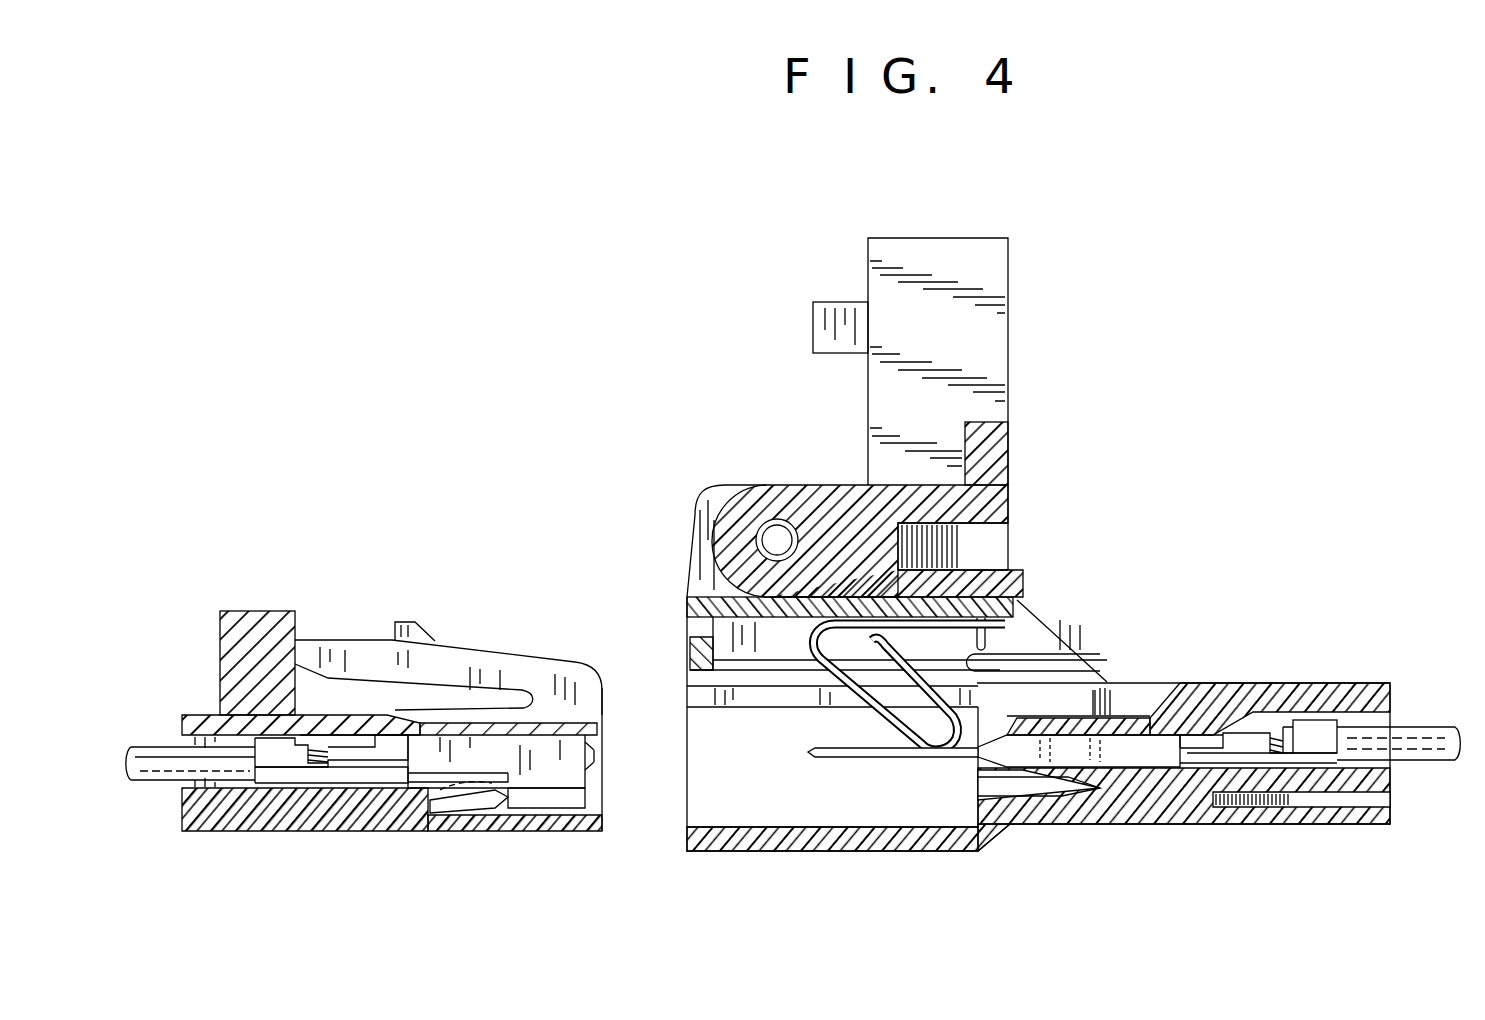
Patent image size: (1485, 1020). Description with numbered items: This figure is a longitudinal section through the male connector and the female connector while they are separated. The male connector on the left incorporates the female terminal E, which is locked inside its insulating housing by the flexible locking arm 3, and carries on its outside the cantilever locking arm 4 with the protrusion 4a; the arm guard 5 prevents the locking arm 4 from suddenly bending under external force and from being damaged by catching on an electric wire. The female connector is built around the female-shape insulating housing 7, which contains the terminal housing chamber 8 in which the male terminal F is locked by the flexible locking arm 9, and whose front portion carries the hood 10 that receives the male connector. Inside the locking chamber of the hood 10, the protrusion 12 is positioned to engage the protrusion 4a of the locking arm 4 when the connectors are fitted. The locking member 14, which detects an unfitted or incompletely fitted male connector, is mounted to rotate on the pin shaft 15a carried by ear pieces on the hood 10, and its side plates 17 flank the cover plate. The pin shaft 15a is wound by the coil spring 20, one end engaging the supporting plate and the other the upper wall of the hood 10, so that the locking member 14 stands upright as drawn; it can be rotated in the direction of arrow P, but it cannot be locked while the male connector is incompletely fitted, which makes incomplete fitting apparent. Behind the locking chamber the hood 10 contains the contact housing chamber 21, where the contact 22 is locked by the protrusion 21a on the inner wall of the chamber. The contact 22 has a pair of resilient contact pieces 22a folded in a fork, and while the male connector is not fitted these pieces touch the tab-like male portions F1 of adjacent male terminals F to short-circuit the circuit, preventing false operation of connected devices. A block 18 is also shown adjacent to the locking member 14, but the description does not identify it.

The flexible locking arm 3 is at (490, 818).
The cantilever locking arm 4 is at (366, 640).
The protrusion 4a is at (415, 627).
The arm guard 5 is at (262, 611).
The female-shape insulating housing 7 is at (1305, 683).
The terminal housing chamber 8 is at (1252, 718).
The flexible locking arm 9 is at (1037, 810).
The hood 10 is at (767, 855).
The protrusion 12 is at (688, 650).
The locking member 14 is at (1023, 258).
The pin shaft 15a is at (778, 518).
The side plates 17 is at (903, 245).
The stopper block 18 is at (827, 302).
The coil spring 20 is at (758, 527).
The contact housing chamber 21 is at (1030, 632).
The protrusion 21a is at (1043, 662).
The contact 22 is at (822, 650).
The resilient contact pieces 22a is at (905, 737).
The female terminal E is at (360, 832).
The male terminal F is at (1148, 752).
The tab-like male portion F1 is at (907, 765).
The arrow P is at (785, 320).